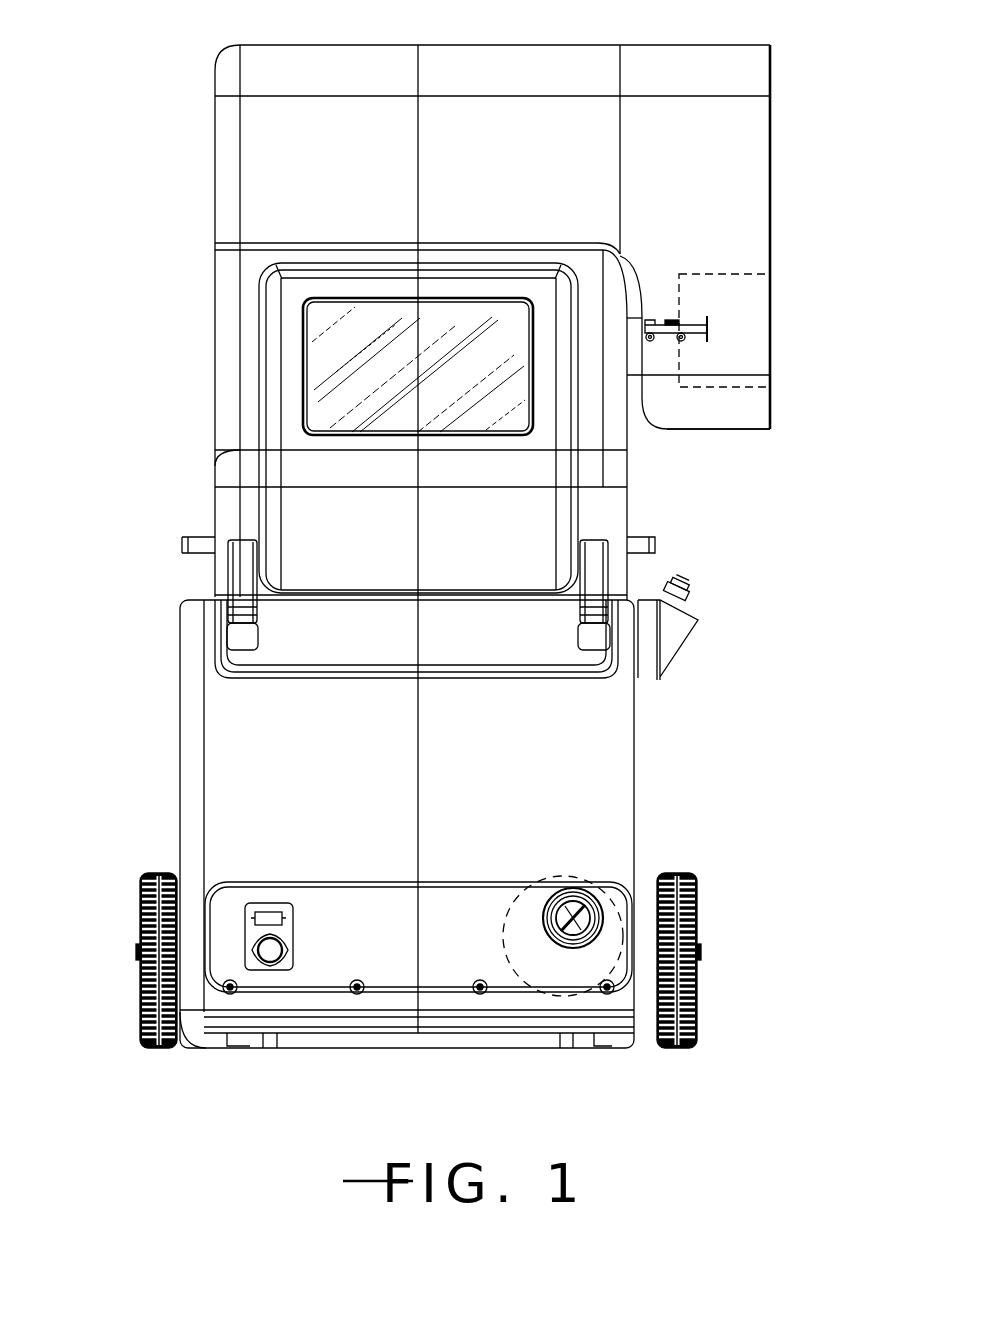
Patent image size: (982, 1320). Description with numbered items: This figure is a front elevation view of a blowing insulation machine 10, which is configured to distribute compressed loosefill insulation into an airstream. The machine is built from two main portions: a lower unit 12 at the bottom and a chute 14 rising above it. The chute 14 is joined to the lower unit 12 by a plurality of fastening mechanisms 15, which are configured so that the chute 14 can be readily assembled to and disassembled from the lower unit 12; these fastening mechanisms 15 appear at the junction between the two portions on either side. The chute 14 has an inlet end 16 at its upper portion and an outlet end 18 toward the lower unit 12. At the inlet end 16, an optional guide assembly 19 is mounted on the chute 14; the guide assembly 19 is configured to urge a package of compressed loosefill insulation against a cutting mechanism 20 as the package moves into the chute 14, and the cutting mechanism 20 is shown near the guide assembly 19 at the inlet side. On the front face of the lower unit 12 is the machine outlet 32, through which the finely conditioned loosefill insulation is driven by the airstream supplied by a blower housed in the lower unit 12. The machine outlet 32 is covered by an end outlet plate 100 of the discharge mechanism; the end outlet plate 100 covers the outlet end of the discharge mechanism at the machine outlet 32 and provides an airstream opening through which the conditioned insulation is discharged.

The blowing insulation machine 10 is at (173, 55).
The lower unit 12 is at (177, 790).
The chute 14 is at (213, 200).
The fastening mechanisms 15 is at (226, 576).
The inlet end 16 is at (770, 140).
The outlet end 18 is at (527, 598).
The guide assembly 19 is at (770, 295).
The cutting mechanism 20 is at (700, 330).
The machine outlet 32 is at (573, 918).
The end outlet plate 100 is at (555, 875).